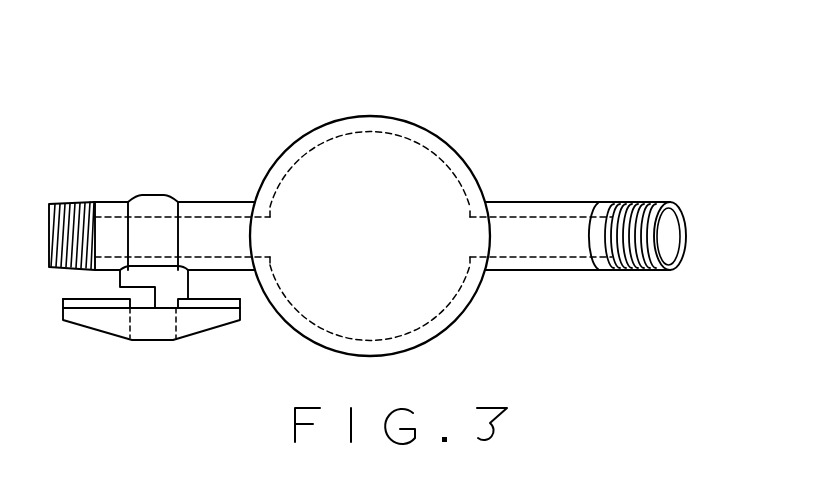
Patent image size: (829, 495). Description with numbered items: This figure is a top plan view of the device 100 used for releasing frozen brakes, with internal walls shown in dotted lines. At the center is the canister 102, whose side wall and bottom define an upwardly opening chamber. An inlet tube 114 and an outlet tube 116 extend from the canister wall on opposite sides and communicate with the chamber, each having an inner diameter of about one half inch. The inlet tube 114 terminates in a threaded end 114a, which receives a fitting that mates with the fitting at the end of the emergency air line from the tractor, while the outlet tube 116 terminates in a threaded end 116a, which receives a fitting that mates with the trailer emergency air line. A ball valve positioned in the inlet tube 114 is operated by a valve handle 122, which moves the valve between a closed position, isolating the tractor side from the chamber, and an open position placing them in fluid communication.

The device 100 is at (506, 155).
The canister 102 is at (419, 114).
The inlet tube 114 is at (218, 202).
The threaded end of the inlet tube 114a is at (63, 204).
The outlet tube 116 is at (535, 271).
The threaded end of the outlet tube 116a is at (637, 203).
The valve handle 122 is at (116, 335).